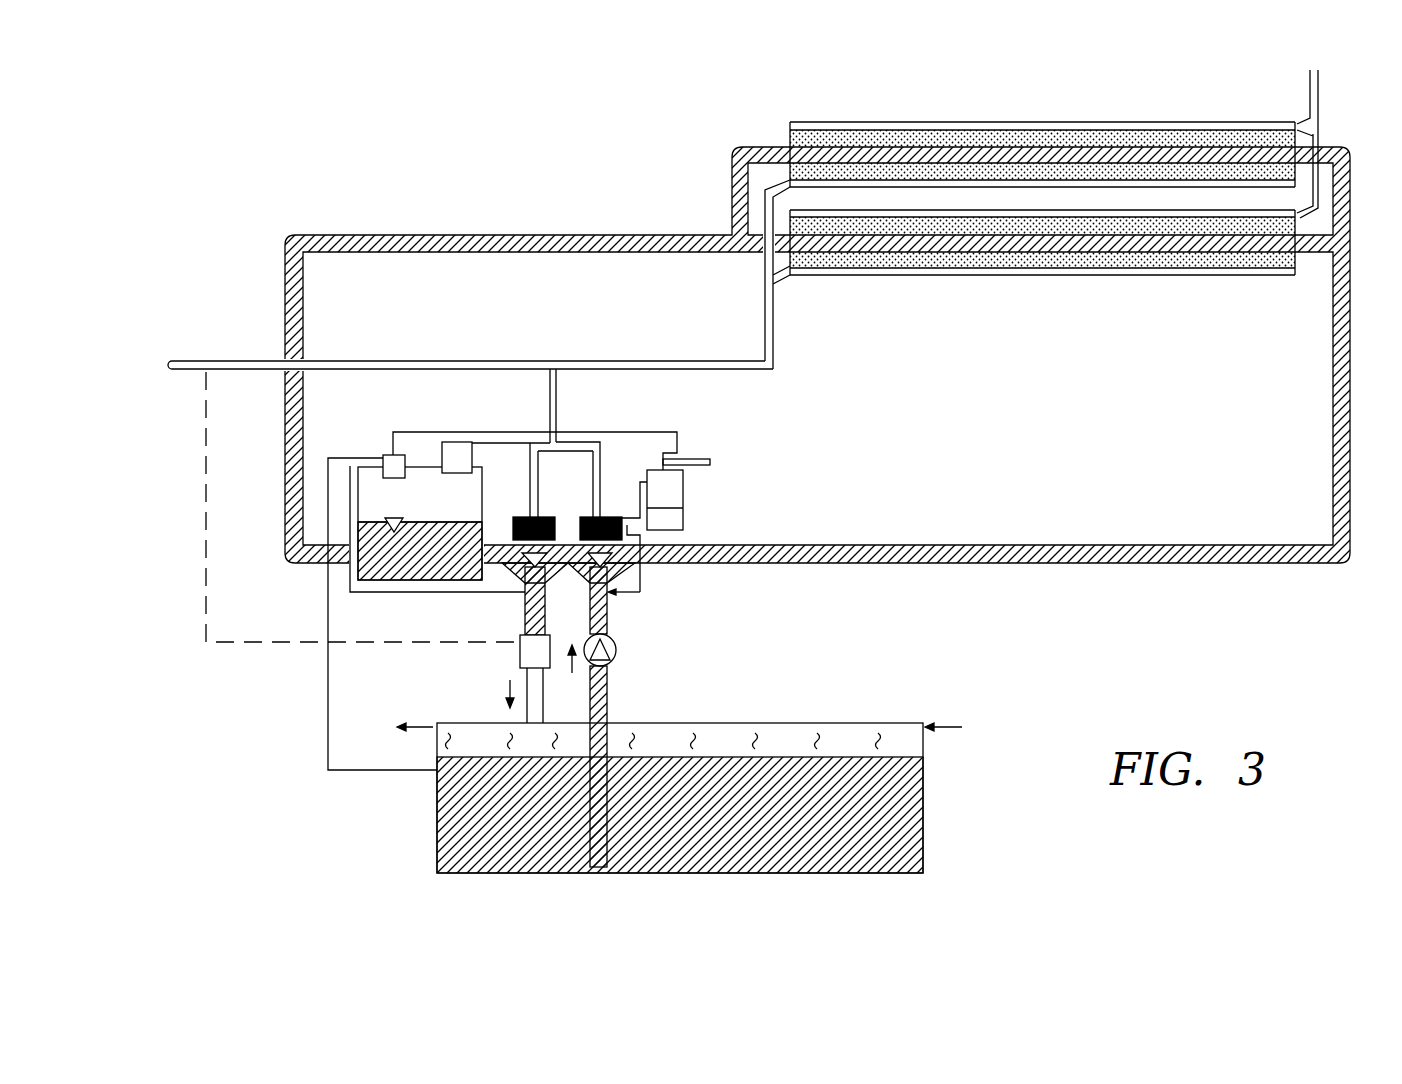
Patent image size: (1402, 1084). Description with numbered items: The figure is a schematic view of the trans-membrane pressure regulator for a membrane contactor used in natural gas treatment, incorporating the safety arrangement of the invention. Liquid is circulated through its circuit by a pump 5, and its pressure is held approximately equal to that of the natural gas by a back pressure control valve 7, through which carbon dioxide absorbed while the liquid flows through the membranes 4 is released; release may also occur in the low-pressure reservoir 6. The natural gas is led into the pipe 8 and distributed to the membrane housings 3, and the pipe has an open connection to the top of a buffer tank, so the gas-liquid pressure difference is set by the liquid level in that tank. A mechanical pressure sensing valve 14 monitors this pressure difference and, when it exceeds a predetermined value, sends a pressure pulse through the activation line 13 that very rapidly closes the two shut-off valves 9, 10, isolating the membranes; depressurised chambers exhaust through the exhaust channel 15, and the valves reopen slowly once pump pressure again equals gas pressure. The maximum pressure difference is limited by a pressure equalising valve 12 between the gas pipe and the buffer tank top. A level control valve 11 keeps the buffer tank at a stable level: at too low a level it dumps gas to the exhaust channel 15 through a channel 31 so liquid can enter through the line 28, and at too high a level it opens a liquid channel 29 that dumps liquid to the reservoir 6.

The membrane housing 3 is at (1207, 183).
The membrane 4 is at (1055, 172).
The pump 5 is at (613, 663).
The reservoir 6 is at (437, 813).
The back pressure control valve 7 is at (520, 663).
The pipe 8 is at (172, 361).
The shut-off valve 9 is at (640, 590).
The shut-off valve 10 is at (510, 590).
The level control valve 11 is at (385, 458).
The pressure equalising valve 12 is at (458, 450).
The activation line 13 is at (627, 477).
The pressure sensing valve 14 is at (672, 495).
The exhaust channel 15 is at (712, 455).
The liquid channel 28 is at (367, 593).
The liquid channel 29 is at (327, 592).
The channel 31 is at (402, 430).